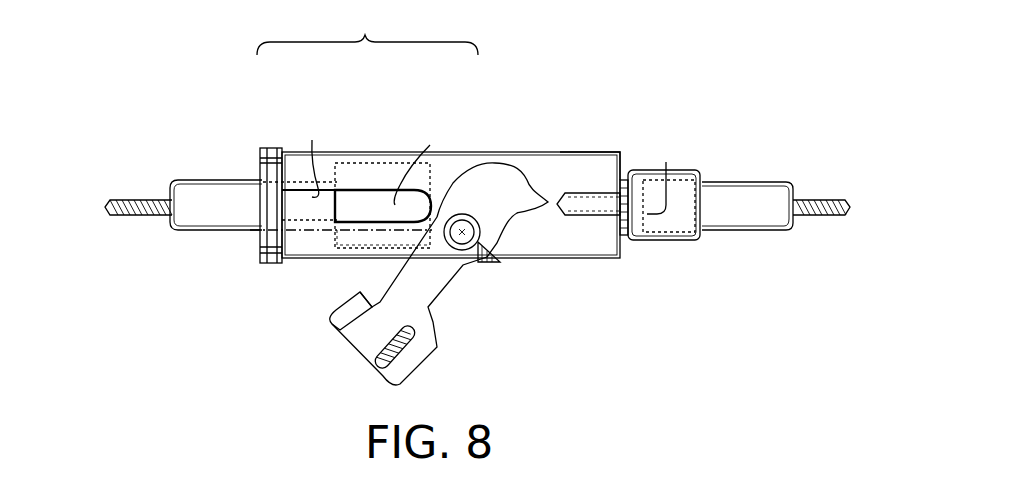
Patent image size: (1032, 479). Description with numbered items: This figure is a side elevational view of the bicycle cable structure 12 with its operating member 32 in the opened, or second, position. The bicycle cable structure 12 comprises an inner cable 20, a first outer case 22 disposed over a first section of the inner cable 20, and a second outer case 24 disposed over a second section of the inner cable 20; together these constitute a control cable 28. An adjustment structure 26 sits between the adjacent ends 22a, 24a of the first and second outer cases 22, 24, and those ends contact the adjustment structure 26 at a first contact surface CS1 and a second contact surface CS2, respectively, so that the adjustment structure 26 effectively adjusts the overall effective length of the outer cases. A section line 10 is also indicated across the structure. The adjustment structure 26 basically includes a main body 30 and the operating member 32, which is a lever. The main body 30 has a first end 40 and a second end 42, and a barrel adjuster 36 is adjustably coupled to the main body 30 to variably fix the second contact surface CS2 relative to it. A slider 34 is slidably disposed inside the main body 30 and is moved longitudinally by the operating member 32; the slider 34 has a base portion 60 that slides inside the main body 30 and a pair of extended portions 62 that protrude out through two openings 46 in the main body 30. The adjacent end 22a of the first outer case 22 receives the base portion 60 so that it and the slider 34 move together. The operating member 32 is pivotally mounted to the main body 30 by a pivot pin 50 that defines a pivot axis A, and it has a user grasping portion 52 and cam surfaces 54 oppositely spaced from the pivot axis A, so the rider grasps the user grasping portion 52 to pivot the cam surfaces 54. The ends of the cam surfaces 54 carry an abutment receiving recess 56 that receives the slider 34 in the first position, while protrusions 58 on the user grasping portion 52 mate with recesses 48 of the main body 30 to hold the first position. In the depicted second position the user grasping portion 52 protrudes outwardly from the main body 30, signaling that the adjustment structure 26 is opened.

The section line 10 is at (100, 207).
The bicycle cable structure 12 is at (150, 103).
The inner wire or cable 20 is at (250, 181).
The first outer case 22 is at (230, 172).
The adjacent end of the first outer case 22a is at (203, 230).
The second outer case 24 is at (636, 183).
The adjacent end of the second outer case 24a is at (753, 230).
The adjustment structure 26 is at (517, 341).
The control cable 28 is at (367, 32).
The main body 30 is at (591, 268).
The operating member 32 is at (388, 322).
The slider 34 is at (378, 178).
The barrel adjuster 36 is at (672, 238).
The first end of the main body 40 is at (277, 263).
The second end of the main body 42 is at (590, 152).
The openings 46 is at (306, 156).
The mating recesses 48 is at (597, 205).
The pivot pin 50 is at (503, 269).
The user grasping portion 52 is at (340, 318).
The cam surfaces 54 is at (453, 173).
The abutment receiving recess 56 is at (505, 183).
The protrusions 58 is at (380, 372).
The base portion 60 is at (347, 260).
The extended portions 62 is at (353, 203).
The pivot axis A is at (470, 238).
The first contact surface CS1 is at (420, 163).
The second contact surface CS2 is at (664, 177).